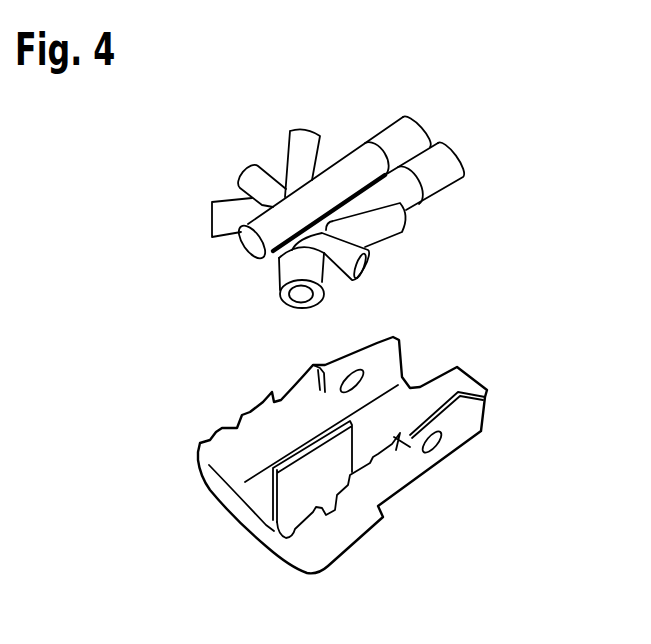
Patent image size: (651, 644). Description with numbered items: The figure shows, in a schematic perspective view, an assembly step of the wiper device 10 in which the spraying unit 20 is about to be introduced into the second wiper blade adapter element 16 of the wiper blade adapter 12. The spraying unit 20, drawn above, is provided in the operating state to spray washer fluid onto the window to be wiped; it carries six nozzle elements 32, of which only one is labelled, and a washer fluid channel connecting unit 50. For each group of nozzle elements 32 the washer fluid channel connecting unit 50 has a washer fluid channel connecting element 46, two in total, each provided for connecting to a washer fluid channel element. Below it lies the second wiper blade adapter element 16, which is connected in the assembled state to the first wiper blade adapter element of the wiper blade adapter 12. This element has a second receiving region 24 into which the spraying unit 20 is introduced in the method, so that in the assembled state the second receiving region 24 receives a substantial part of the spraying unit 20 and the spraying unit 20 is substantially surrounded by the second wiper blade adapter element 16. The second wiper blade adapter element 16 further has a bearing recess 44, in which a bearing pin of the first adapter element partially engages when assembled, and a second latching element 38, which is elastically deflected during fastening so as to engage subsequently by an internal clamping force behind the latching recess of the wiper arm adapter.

The wiper device 10 is at (369, 176).
The wiper blade adapter 12 is at (393, 458).
The second wiper blade adapter element 16 is at (347, 532).
The spraying unit 20 is at (463, 152).
The second receiving region 24 is at (371, 416).
The nozzle element 32 is at (292, 270).
The second latching element 38 is at (479, 434).
The bearing recess 44 is at (437, 448).
The washer fluid channel connecting element 46 is at (432, 177).
The washer fluid channel connecting unit 50 is at (465, 178).